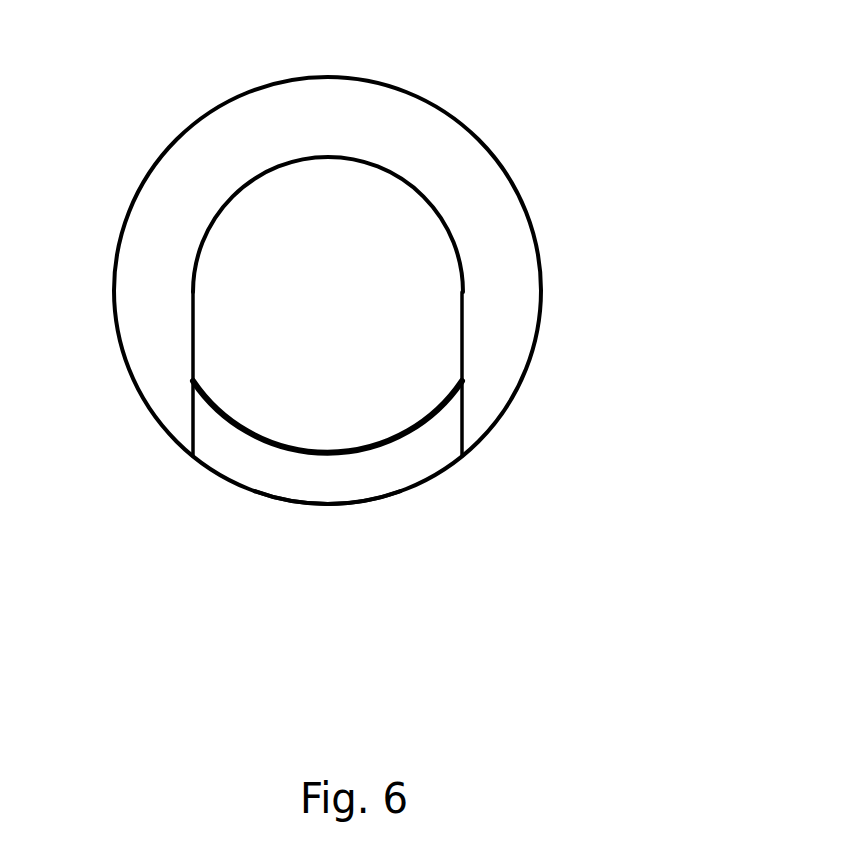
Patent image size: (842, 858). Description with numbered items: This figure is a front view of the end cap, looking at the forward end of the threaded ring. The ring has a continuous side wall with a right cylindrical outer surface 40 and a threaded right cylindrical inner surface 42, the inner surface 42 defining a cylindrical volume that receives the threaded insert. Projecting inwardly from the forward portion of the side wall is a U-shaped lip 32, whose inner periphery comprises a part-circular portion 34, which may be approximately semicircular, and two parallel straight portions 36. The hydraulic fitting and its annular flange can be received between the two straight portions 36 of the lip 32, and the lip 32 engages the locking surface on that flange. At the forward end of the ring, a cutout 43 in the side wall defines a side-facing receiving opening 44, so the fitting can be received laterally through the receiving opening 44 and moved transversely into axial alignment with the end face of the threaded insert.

The U-shaped lip 32 is at (490, 200).
The part-circular portion 34 is at (300, 157).
The straight portions 36 is at (193, 343).
The right cylindrical outer surface 40 is at (408, 90).
The right cylindrical inner surface 42 is at (238, 197).
The cutout 43 is at (297, 488).
The receiving opening 44 is at (348, 518).